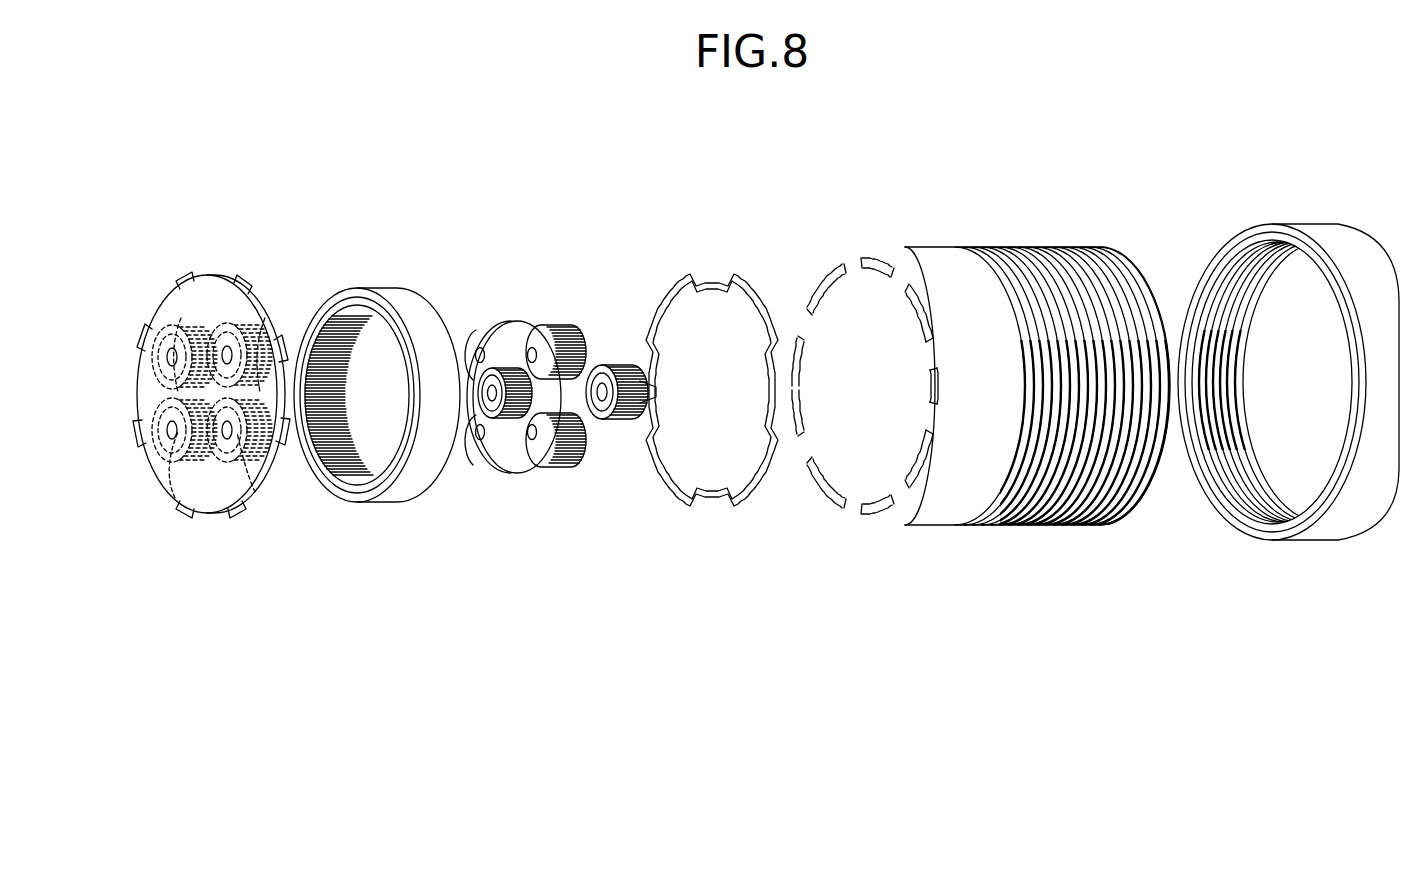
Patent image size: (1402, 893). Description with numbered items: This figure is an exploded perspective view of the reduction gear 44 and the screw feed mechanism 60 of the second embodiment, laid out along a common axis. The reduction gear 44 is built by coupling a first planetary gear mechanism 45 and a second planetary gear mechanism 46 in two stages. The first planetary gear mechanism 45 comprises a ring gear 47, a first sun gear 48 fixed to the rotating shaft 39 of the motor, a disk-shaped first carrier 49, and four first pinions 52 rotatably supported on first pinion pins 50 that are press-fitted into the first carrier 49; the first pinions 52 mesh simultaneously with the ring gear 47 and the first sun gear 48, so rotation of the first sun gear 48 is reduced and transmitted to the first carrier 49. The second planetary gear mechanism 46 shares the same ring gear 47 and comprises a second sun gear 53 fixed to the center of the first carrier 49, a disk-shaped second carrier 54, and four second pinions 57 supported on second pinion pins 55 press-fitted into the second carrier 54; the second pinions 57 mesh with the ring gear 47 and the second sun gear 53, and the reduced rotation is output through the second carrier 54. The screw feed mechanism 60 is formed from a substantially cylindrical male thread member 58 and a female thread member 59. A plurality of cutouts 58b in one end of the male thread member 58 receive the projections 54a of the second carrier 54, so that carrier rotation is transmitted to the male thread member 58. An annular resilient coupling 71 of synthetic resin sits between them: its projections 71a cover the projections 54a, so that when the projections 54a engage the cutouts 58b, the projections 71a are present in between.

The rotating shaft 39 is at (640, 378).
The reduction gear 44 is at (561, 162).
The first planetary gear mechanism 45 is at (534, 286).
The second planetary gear mechanism 46 is at (330, 253).
The ring gear 47 is at (384, 290).
The first sun gear 48 is at (619, 424).
The first carrier 49 is at (513, 452).
The first pinion pins 50 is at (481, 349).
The first pinions 52 is at (469, 340).
The second sun gear 53 is at (507, 393).
The second carrier 54 is at (212, 284).
The projections 54a is at (182, 272).
The second pinion pins 55 is at (230, 346).
The second pinions 57 is at (181, 318).
The male thread member 58 is at (1075, 247).
The cutouts 58b is at (844, 268).
The female thread member 59 is at (1205, 255).
The screw feed mechanism 60 is at (1097, 140).
The resilient coupling 71 is at (748, 271).
The projections 71a is at (676, 282).